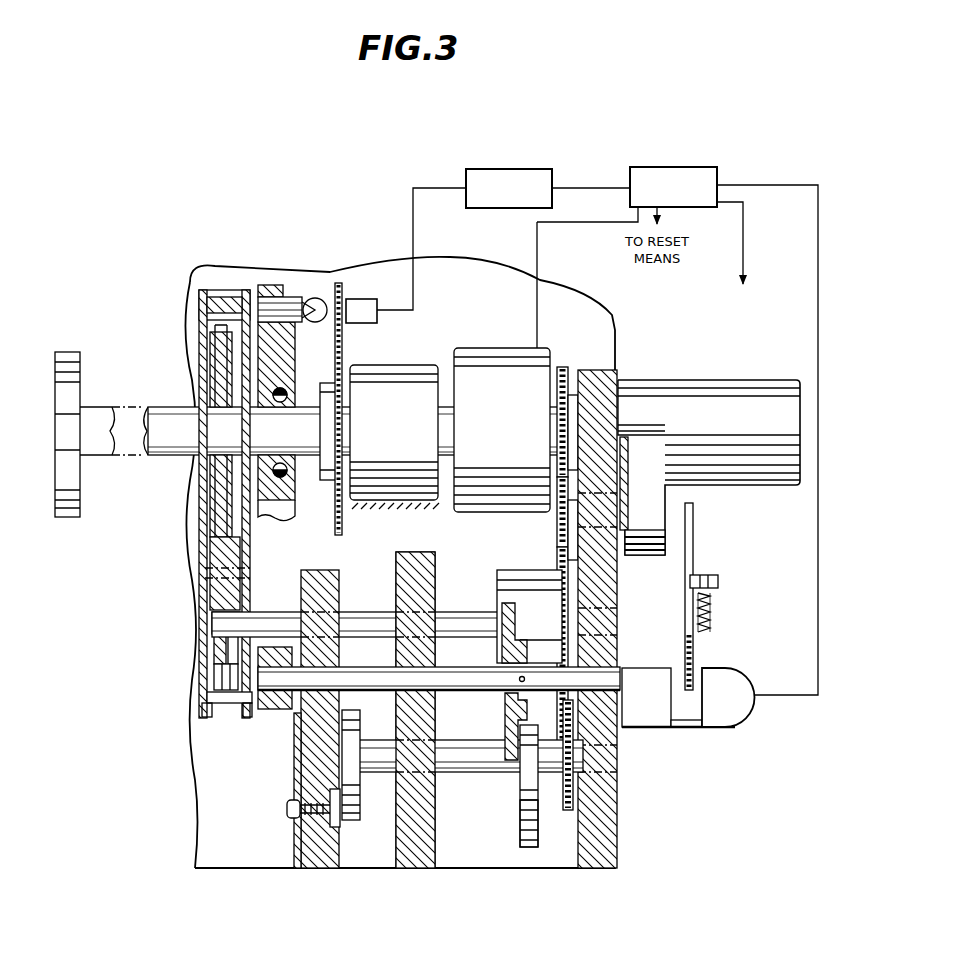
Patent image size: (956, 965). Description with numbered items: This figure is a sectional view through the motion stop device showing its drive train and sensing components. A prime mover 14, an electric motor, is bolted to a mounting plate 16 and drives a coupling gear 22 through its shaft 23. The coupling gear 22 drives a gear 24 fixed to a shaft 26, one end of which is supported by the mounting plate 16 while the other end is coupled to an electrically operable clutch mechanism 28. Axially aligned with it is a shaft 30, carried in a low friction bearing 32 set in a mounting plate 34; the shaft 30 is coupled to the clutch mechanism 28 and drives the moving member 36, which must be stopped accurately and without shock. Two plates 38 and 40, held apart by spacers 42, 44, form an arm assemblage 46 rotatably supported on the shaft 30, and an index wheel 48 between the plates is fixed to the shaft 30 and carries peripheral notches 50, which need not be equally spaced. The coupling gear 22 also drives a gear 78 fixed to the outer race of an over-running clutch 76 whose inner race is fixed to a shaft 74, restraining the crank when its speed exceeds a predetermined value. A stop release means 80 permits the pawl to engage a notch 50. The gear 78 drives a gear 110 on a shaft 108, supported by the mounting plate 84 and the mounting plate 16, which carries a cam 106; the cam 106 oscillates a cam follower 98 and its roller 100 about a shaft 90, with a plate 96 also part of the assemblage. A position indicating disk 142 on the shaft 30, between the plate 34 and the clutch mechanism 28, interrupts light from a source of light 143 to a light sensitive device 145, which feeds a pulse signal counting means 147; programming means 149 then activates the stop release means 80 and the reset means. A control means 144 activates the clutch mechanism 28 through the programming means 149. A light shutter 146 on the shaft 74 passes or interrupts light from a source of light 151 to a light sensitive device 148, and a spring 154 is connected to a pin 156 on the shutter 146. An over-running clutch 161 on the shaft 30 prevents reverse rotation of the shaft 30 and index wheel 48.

The prime mover 14 is at (712, 380).
The mounting plate 16 is at (608, 376).
The coupling gear 22 is at (557, 520).
The shaft 23 is at (625, 527).
The gear 24 is at (572, 393).
The shaft 26 is at (558, 365).
The clutch mechanism 28 is at (497, 342).
The shaft 30 is at (165, 407).
The low friction bearing 32 is at (290, 498).
The mounting plate 34 is at (282, 372).
The moving member 36 is at (68, 352).
The plate 38 is at (203, 620).
The plate 40 is at (250, 588).
The spacer 42 is at (218, 297).
The spacer 44 is at (240, 712).
The arm assemblage 46 is at (190, 338).
The index wheel 48 is at (217, 490).
The notches 50 is at (215, 340).
The shaft 74 is at (458, 610).
The over-running clutch 76 is at (500, 568).
The gear 78 is at (556, 572).
The stop release means 80 is at (745, 270).
The mounting plate 84 is at (302, 850).
The shaft 90 is at (470, 692).
The plate 96 is at (413, 868).
The cam follower 98 is at (504, 706).
The cam follower roller 100 is at (517, 778).
The cam 106 is at (528, 852).
The shaft 108 is at (473, 772).
The gear 110 is at (568, 812).
The position indicating disk 142 is at (343, 345).
The source of light 143 is at (310, 298).
The control means 144 is at (703, 733).
The light sensitive device 145 is at (383, 292).
The light shutter 146 is at (693, 535).
The pulse signal counting means 147 is at (484, 208).
The light sensitive device 148 is at (732, 728).
The programming means 149 is at (717, 175).
The source of light 151 is at (648, 720).
The spring 154 is at (712, 612).
The pin 156 is at (718, 582).
The over-running clutch 161 is at (410, 365).